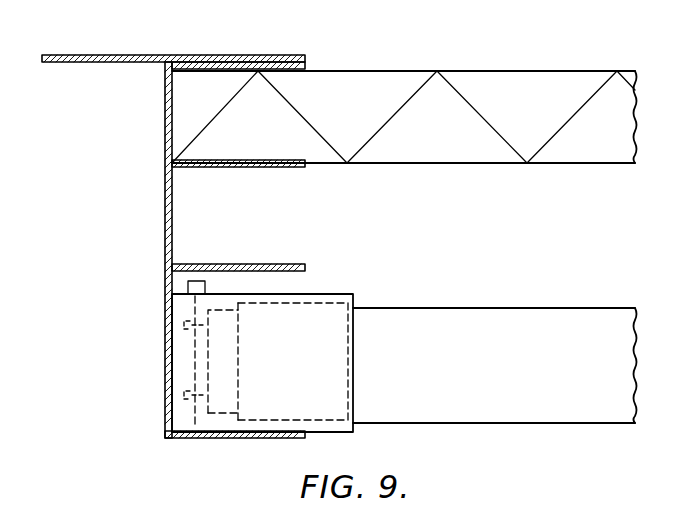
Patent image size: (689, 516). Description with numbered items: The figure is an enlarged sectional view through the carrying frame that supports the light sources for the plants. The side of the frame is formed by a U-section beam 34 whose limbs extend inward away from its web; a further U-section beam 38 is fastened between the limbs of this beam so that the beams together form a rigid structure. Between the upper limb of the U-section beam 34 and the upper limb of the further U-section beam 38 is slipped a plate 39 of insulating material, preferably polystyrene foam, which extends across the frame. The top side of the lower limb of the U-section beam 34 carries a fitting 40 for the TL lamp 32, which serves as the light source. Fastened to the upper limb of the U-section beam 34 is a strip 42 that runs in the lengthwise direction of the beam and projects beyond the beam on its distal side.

The TL lamp 32 is at (592, 320).
The U-section beam 34 is at (165, 273).
The further U-section beam 38 is at (284, 264).
The plate of insulating material 39 is at (578, 157).
The fitting 40 is at (337, 302).
The strip 42 is at (122, 56).